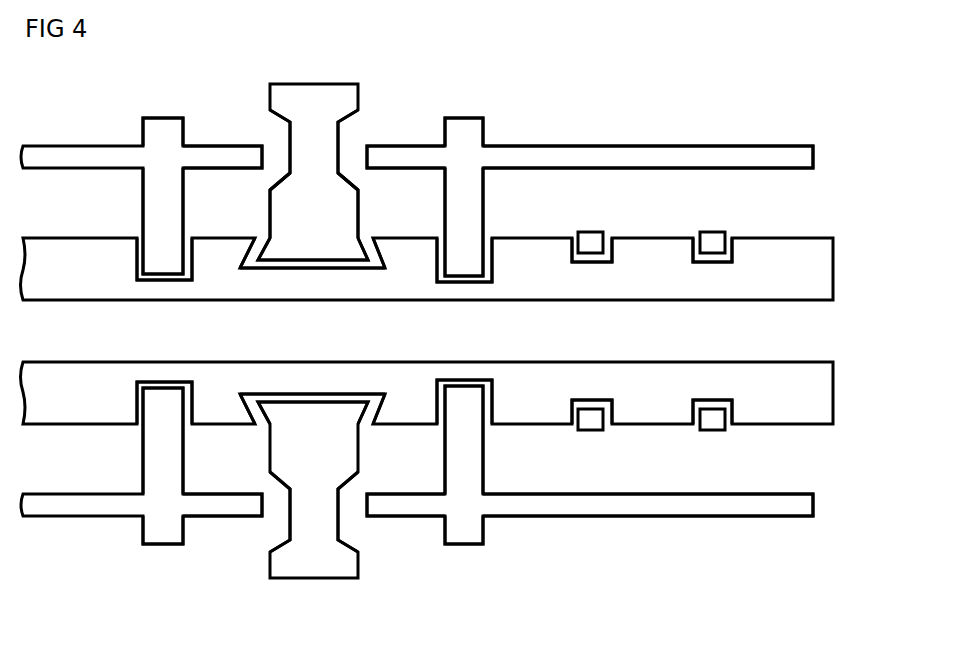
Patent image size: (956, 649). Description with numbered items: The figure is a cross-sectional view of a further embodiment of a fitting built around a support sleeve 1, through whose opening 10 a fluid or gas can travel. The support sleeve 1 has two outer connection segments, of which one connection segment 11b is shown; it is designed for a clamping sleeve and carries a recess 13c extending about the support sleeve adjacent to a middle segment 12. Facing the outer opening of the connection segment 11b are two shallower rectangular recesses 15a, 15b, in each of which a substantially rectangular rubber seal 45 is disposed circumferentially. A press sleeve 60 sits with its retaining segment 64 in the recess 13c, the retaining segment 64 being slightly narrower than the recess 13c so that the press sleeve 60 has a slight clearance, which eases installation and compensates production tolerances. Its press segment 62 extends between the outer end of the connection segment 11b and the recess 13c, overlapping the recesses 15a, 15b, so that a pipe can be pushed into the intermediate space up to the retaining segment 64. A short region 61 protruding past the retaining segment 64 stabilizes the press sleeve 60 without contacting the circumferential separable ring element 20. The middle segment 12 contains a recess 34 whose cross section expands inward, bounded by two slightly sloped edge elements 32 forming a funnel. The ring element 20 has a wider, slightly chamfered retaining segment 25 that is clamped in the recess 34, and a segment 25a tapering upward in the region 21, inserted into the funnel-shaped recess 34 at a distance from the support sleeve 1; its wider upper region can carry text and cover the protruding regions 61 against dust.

The support sleeve 1 is at (792, 97).
The opening 10 is at (667, 344).
The connection segment 11b is at (800, 292).
The middle segment 12 is at (255, 298).
The recess 13c is at (165, 282).
The recess 15a is at (593, 263).
The recess 15b is at (713, 263).
The circumferential separable ring element 20 is at (303, 78).
The region 21 is at (292, 140).
The retaining segment 25 is at (325, 255).
The segment 25a is at (310, 203).
The sloped edge elements 32 is at (247, 245).
The recess 34 is at (312, 268).
The rubber seal 45 is at (592, 232).
The press sleeve 60 is at (80, 128).
The region 61 is at (413, 157).
The press segment 62 is at (558, 152).
The retaining segment 64 is at (165, 125).